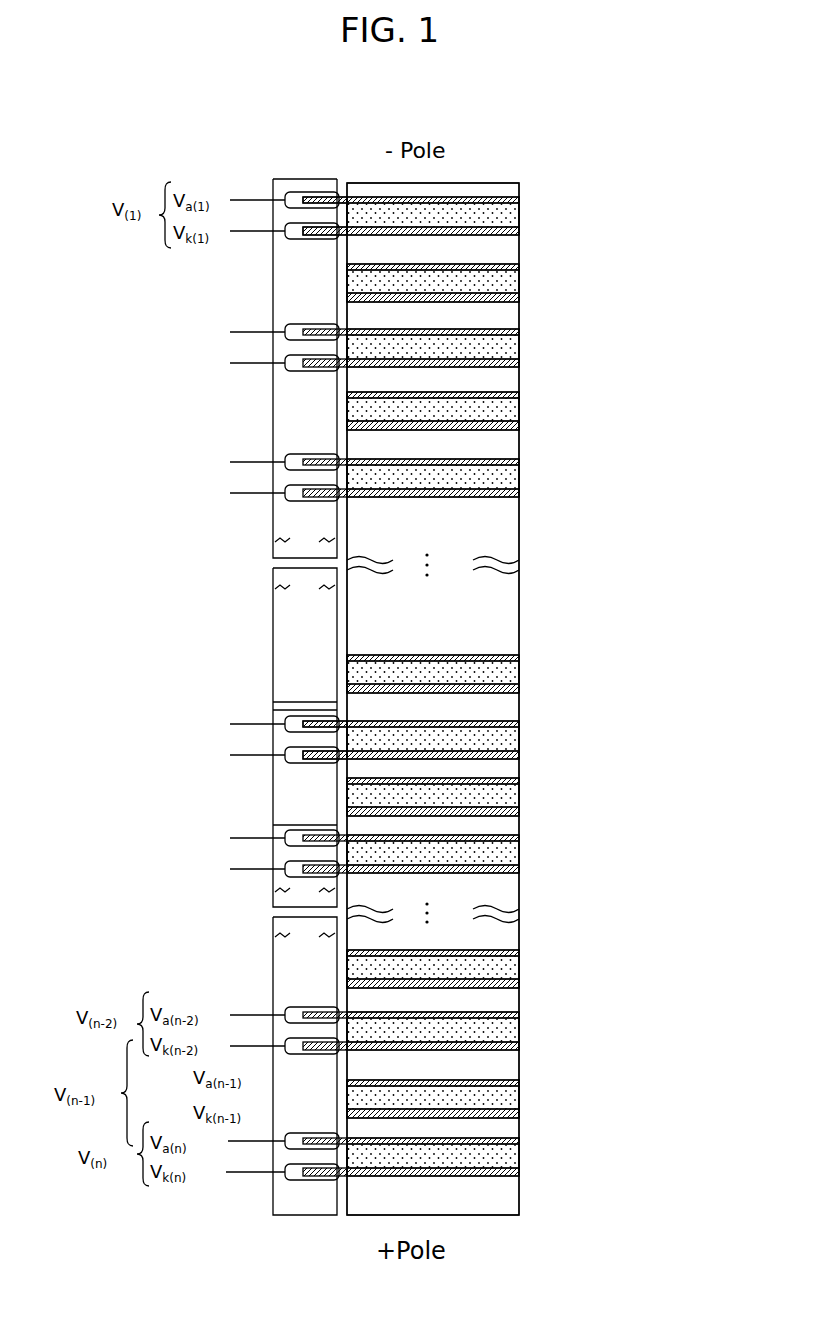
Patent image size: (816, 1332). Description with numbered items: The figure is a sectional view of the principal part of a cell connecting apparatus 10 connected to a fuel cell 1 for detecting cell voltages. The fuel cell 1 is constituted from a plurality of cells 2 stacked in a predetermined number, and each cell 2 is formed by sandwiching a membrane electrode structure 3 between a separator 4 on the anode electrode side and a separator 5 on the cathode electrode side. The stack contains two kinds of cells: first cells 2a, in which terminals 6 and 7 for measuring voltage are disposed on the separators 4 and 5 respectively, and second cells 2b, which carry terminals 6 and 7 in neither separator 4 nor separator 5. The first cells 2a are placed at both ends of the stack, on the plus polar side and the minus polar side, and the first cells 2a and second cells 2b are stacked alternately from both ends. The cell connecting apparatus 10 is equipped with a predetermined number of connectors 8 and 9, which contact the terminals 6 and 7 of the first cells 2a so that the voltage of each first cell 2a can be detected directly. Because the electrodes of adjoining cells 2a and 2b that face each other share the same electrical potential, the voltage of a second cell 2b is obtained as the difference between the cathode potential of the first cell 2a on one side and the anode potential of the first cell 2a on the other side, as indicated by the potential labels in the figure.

The fuel cell 1 is at (583, 128).
The cell 2 is at (433, 699).
The first cell 2a is at (534, 214).
The second cell 2b is at (534, 279).
The membrane electrode structure 3 is at (502, 212).
The separator 4 is at (473, 200).
The separator 5 is at (443, 231).
The terminal 6 is at (343, 236).
The terminal 7 is at (348, 228).
The connector 8 is at (281, 197).
The connector 9 is at (286, 222).
The cell connecting apparatus 10 is at (300, 173).